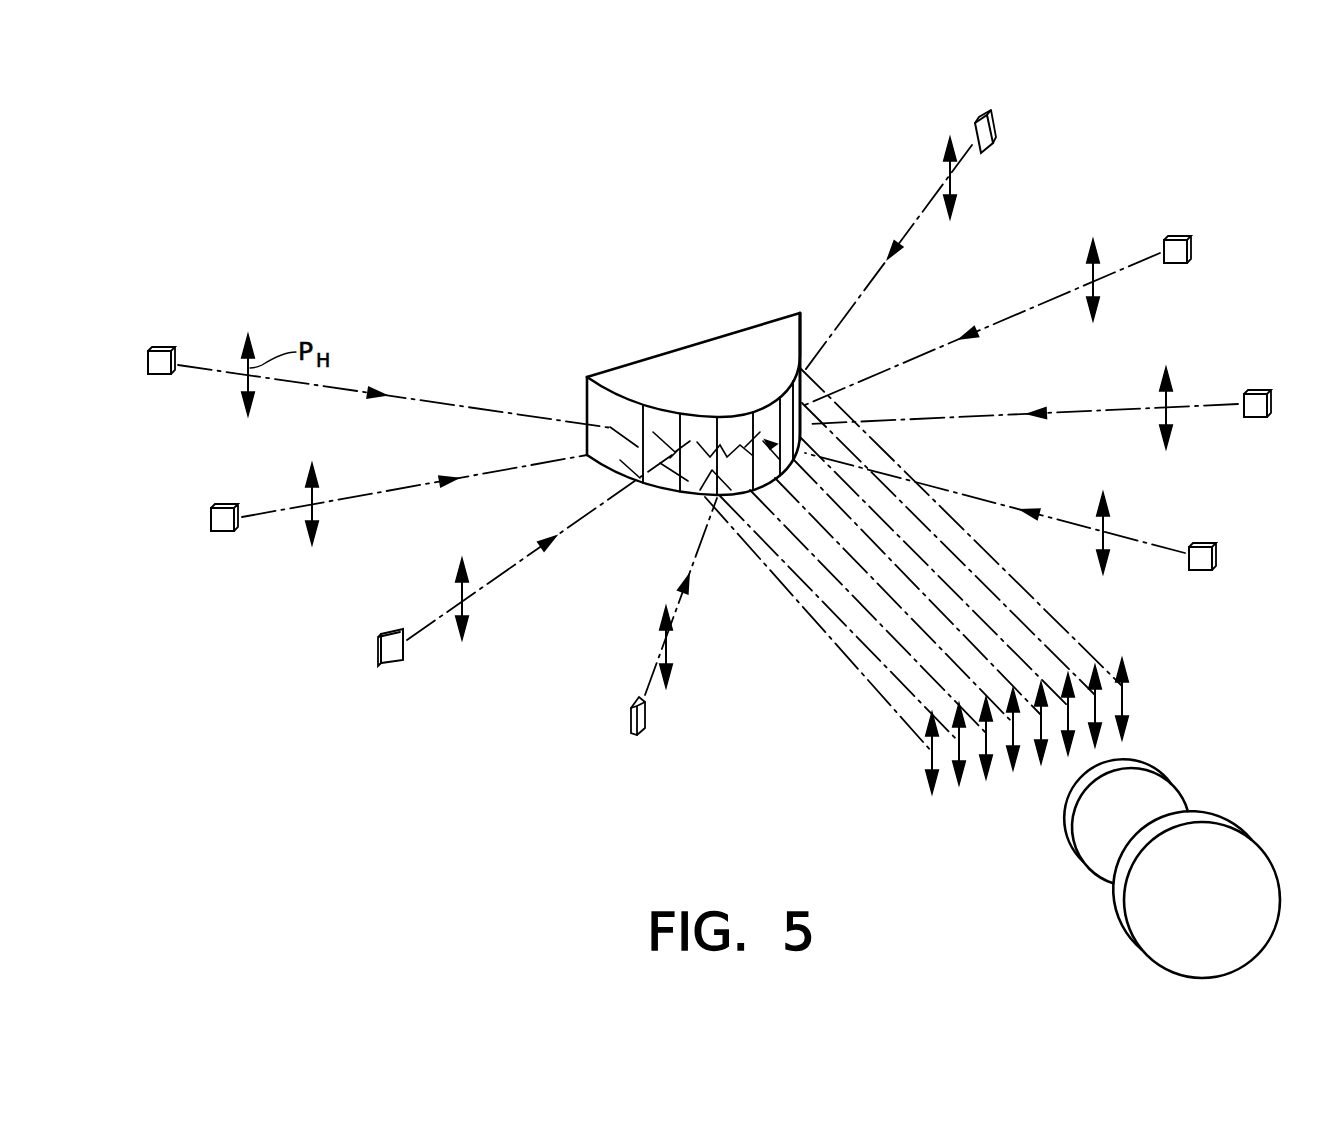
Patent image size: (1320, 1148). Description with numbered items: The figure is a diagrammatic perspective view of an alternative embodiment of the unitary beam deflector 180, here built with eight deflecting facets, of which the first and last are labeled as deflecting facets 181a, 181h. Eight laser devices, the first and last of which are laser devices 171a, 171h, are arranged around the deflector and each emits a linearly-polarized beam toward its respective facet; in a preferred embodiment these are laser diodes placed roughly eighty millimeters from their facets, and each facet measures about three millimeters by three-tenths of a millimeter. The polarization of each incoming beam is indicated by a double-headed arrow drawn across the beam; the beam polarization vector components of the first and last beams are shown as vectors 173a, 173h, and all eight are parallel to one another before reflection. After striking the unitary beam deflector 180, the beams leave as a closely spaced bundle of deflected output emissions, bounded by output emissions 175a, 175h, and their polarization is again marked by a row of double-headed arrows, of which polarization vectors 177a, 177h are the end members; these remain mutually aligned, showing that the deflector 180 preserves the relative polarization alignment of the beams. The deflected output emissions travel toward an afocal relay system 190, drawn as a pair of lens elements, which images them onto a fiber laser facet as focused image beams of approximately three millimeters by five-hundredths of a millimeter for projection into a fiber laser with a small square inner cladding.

The laser device 171h is at (163, 348).
The beam polarization vector component 173h is at (246, 385).
The laser device 171a is at (993, 122).
The beam polarization vector component 173a is at (951, 185).
The deflected output emission 175h is at (866, 676).
The deflected output emission 175a is at (1055, 622).
The polarization vector 177h is at (930, 758).
The polarization vector 177a is at (1125, 706).
The unitary beam deflector 180 is at (655, 355).
The deflecting facet 181h is at (607, 403).
The deflecting facet 181a is at (804, 330).
The afocal relay system 190 is at (1279, 836).